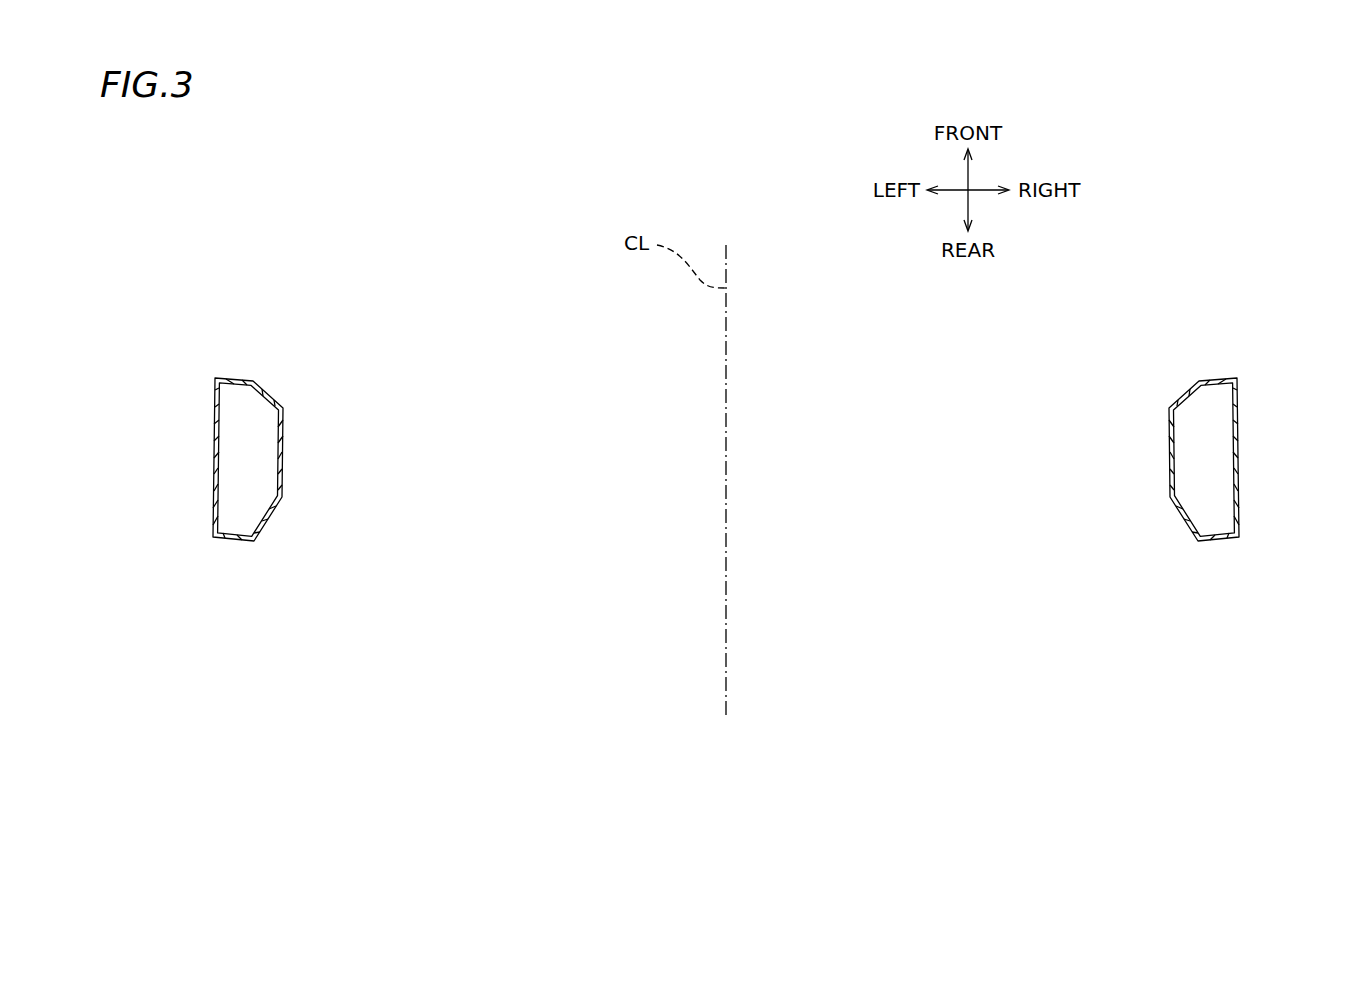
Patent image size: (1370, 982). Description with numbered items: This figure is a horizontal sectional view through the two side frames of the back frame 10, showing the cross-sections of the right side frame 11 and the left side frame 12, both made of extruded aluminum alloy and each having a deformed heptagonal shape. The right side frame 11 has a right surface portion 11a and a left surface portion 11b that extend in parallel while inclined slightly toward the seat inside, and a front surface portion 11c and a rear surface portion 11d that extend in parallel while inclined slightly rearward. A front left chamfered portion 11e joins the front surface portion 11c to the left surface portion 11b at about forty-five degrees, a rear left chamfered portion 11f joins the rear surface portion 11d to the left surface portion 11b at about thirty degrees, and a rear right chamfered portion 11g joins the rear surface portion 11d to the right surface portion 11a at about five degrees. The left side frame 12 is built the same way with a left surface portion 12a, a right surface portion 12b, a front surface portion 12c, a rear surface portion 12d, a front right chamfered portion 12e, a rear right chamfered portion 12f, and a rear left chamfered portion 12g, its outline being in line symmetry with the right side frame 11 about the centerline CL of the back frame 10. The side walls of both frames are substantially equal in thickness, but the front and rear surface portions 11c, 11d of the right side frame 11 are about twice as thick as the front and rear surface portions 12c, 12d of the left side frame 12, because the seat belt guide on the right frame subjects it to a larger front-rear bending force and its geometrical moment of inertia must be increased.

The back frame 10 is at (726, 471).
The right side frame 11 is at (1240, 408).
The right surface portion 11a is at (1240, 458).
The left surface portion 11b is at (1170, 443).
The front surface portion 11c is at (1208, 380).
The rear surface portion 11d is at (1218, 548).
The front left chamfered portion 11e is at (1170, 405).
The rear left chamfered portion 11f is at (1180, 520).
The rear right chamfered portion 11g is at (1240, 510).
The left side frame 12 is at (214, 408).
The left surface portion 12a is at (212, 460).
The right surface portion 12b is at (283, 433).
The front surface portion 12c is at (248, 376).
The rear surface portion 12d is at (228, 548).
The front right chamfered portion 12e is at (270, 390).
The rear right chamfered portion 12f is at (263, 533).
The rear left chamfered portion 12g is at (212, 520).